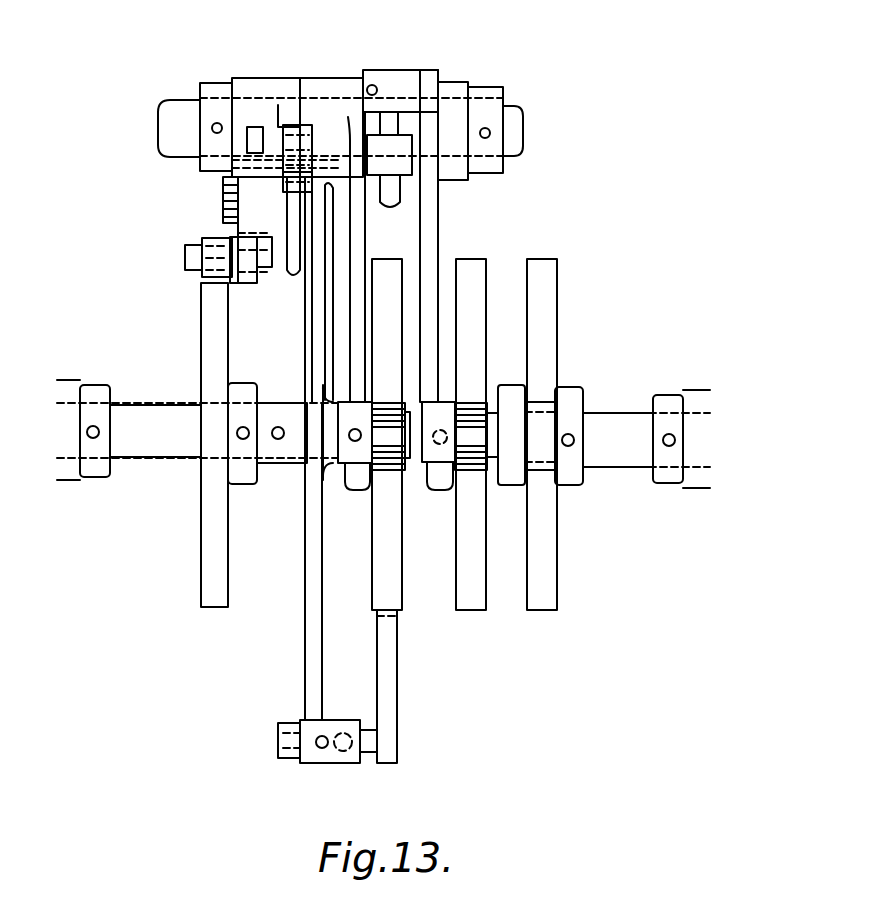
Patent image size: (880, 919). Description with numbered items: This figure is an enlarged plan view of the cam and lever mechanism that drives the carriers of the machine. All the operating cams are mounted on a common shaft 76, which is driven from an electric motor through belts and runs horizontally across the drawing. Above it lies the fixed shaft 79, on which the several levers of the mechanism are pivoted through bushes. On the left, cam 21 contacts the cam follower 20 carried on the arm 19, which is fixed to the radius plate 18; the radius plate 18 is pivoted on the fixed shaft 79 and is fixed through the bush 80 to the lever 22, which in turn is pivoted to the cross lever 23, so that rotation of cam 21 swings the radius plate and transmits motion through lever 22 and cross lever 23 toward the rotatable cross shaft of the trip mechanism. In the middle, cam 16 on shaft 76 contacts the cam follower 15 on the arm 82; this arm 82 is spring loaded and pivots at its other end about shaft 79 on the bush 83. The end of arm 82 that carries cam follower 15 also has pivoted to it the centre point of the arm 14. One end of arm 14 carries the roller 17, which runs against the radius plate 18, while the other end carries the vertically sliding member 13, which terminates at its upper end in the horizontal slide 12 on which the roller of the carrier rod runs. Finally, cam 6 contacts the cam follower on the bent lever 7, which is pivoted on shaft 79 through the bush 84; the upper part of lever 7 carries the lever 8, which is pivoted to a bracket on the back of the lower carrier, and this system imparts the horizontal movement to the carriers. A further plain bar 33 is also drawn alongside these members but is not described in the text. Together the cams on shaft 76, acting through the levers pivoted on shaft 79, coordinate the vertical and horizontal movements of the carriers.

The cam 6 is at (470, 610).
The bent lever 7 is at (428, 152).
The lever 8 is at (384, 200).
The horizontal slide 12 is at (392, 690).
The vertically sliding member 13 is at (364, 768).
The arm 14 is at (313, 352).
The cam follower 15 is at (390, 455).
The cam 16 is at (388, 586).
The roller 17 is at (268, 200).
The radius plate 18 is at (272, 250).
The arm 19 is at (243, 284).
The cam follower 20 is at (215, 262).
The cam 21 is at (205, 594).
The lever 22 is at (268, 125).
The cross lever 23 is at (296, 282).
The bar 33 is at (548, 610).
The common shaft 76 is at (614, 422).
The fixed shaft 79 is at (505, 122).
The bush 80 is at (276, 80).
The arm 82 is at (363, 240).
The bush 83 is at (330, 80).
The bush 84 is at (460, 180).